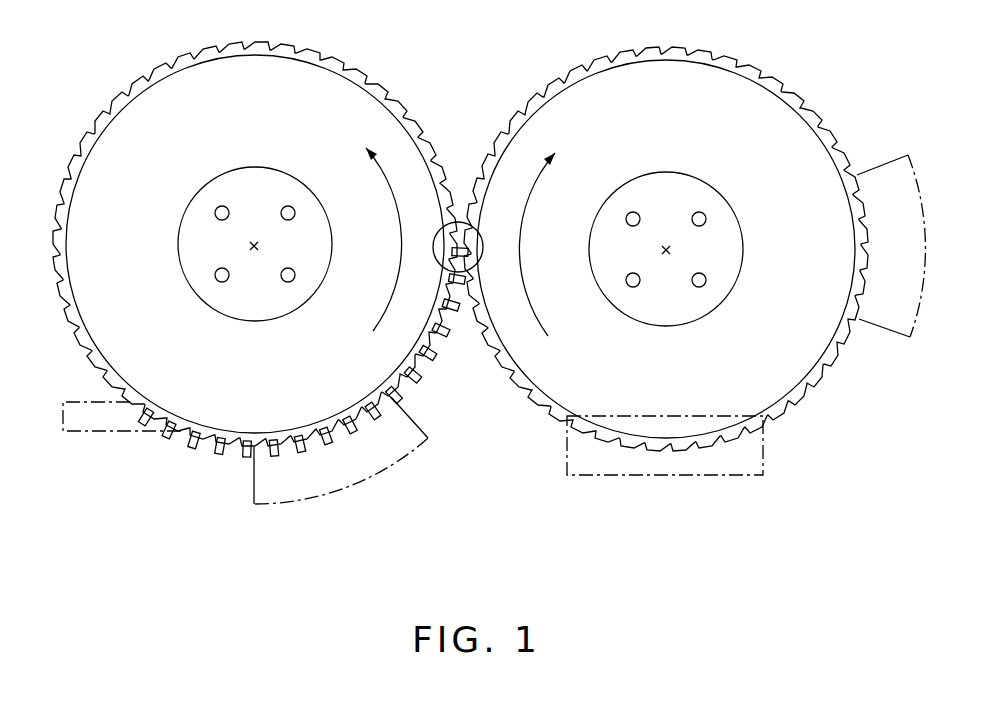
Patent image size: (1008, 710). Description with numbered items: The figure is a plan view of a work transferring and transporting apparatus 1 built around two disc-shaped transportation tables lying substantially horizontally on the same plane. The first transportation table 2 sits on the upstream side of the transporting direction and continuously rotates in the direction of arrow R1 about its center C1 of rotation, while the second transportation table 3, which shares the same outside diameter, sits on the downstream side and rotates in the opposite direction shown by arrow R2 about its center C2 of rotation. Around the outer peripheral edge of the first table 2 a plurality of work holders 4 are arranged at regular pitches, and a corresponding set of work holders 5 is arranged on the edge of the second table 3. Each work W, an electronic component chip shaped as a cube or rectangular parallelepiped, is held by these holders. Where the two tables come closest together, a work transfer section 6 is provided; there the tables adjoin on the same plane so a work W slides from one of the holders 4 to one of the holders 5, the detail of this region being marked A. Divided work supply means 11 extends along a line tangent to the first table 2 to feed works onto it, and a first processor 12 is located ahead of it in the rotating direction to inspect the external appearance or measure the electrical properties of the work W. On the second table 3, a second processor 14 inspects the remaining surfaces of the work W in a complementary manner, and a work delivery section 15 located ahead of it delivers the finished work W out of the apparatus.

The work transferring and transporting apparatus 1 is at (457, 86).
The first transportation table 2 is at (307, 78).
The second transportation table 3 is at (582, 75).
The work holders 4 is at (155, 73).
The work holders 5 is at (800, 108).
The work transfer section 6 is at (463, 304).
The divided work supply means 11 is at (87, 440).
The first processor 12 is at (288, 510).
The second processor 14 is at (895, 338).
The work delivery section 15 is at (610, 477).
The work W is at (227, 452).
The transfer area A is at (460, 272).
The center of rotation C1 is at (250, 245).
The center of rotation C2 is at (672, 250).
The rotating direction arrow R1 is at (402, 243).
The rotating direction arrow R2 is at (519, 251).